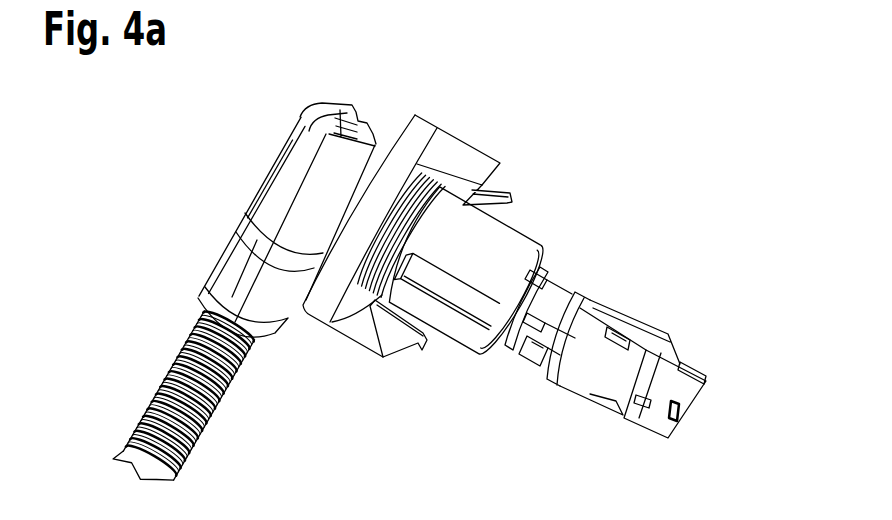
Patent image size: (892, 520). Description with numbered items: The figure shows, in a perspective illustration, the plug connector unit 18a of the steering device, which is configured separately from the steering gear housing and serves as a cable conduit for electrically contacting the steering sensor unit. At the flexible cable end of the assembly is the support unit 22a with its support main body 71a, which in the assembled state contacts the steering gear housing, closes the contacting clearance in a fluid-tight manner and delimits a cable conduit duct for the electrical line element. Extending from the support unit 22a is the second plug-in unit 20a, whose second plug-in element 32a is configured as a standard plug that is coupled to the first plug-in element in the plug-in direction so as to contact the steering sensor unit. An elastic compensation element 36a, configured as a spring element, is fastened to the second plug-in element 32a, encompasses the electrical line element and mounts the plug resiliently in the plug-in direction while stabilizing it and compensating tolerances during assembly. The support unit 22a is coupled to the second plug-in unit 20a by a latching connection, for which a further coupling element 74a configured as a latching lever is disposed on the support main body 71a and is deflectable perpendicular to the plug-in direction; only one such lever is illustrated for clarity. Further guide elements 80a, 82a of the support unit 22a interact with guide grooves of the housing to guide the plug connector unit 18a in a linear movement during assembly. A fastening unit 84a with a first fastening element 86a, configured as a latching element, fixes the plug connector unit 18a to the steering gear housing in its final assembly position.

The plug connector unit 18a is at (618, 122).
The second plug-in unit 20a is at (671, 312).
The support unit 22a is at (257, 136).
The second plug-in element 32a is at (643, 362).
The compensation element 36a is at (593, 322).
The support main body 71a is at (268, 182).
The further coupling element 74a is at (458, 306).
The further guide element 80a is at (512, 178).
The further guide element 82a is at (415, 366).
The fastening unit 84a is at (469, 110).
The first fastening element 86a is at (467, 162).